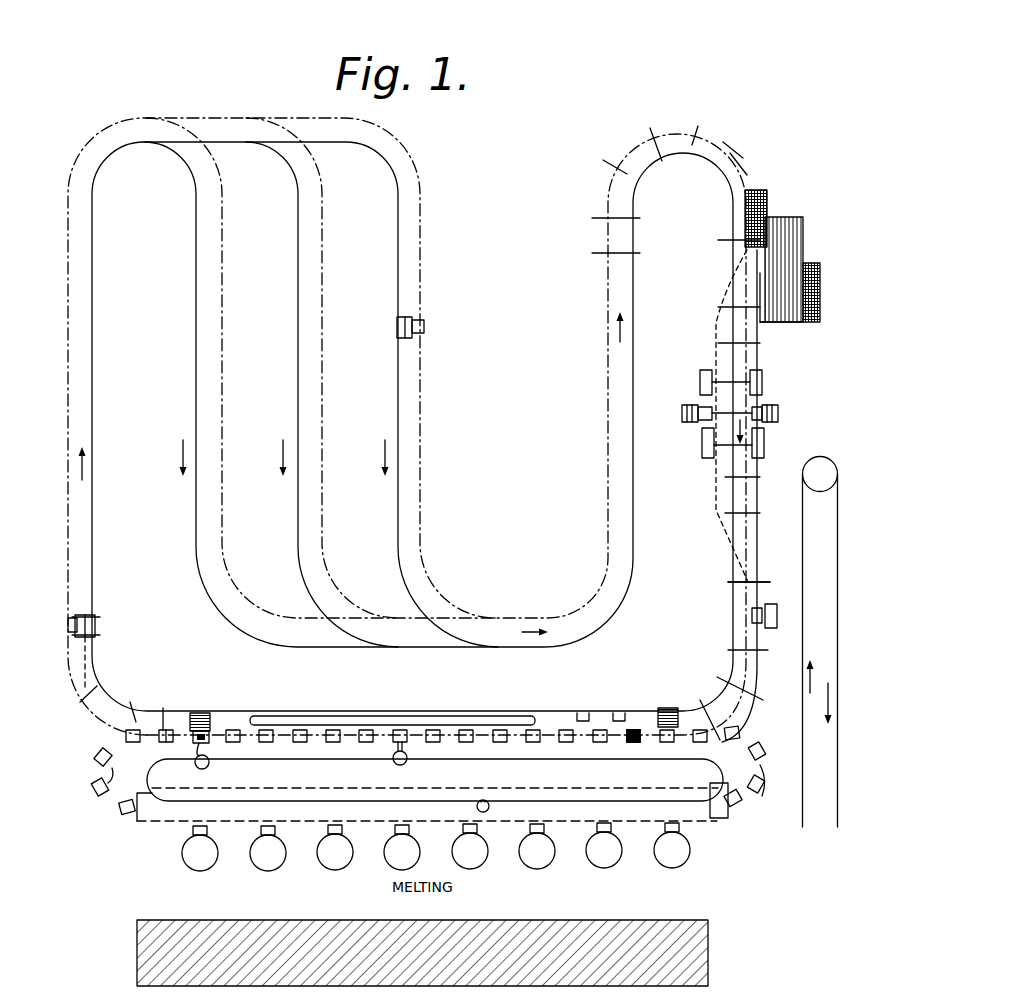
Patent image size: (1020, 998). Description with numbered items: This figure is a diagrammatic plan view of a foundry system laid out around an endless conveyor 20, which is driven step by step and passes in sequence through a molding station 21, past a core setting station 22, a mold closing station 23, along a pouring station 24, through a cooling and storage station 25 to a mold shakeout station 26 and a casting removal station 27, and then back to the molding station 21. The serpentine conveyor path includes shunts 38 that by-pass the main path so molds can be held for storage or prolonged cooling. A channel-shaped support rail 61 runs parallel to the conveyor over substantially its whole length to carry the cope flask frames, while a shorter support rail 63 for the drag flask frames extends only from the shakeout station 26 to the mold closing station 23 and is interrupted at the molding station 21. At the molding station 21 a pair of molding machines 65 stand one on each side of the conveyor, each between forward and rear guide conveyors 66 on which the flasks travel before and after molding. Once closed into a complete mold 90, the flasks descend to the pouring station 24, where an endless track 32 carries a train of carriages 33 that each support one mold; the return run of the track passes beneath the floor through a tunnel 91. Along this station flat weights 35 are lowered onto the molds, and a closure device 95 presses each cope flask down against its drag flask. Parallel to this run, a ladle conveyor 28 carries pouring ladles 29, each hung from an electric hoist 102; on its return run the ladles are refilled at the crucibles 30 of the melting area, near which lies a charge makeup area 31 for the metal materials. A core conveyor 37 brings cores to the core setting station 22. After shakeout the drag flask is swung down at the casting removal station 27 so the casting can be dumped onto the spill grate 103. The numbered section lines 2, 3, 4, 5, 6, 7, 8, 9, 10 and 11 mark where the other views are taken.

The section line 2- 2 is at (672, 335).
The section line 3- 3 is at (673, 373).
The section line 4- 4 is at (667, 400).
The section line 5- 5 is at (681, 473).
The section line 6- 6 is at (712, 573).
The section line 7- 7 is at (707, 614).
The section line 8- 8 is at (214, 688).
The section line 9- 9 is at (111, 652).
The section line 10- 10 is at (705, 210).
The section line 11- 11 is at (688, 272).
The endless conveyor 20 is at (633, 410).
The molding station 21 is at (764, 429).
The core setting station 22 is at (755, 583).
The mold closing station 23 is at (762, 606).
The pouring station 24 is at (435, 778).
The cooling and storage station 25 is at (251, 362).
The mold shakeout station 26 is at (771, 196).
The casting removal station 27 is at (796, 262).
The endless conveyor 28 is at (333, 761).
The pouring ladles 29 is at (196, 768).
The crucibles 30 is at (249, 872).
The charge makeup area 31 is at (540, 920).
The endless track 32 is at (94, 764).
The carriages 33 is at (193, 742).
The flat weights 35 is at (212, 730).
The core conveyor 37 is at (820, 642).
The shunts 38 is at (195, 273).
The support rail 61 is at (738, 152).
The support rail 63 is at (716, 318).
The molding machines 65 is at (683, 422).
The guide conveyors 66 is at (700, 384).
The complete mold 90 is at (97, 622).
The tunnel 91 is at (713, 822).
The closure device 95 is at (343, 715).
The electric hoist 102 is at (820, 322).
The spill grate 103 is at (777, 326).